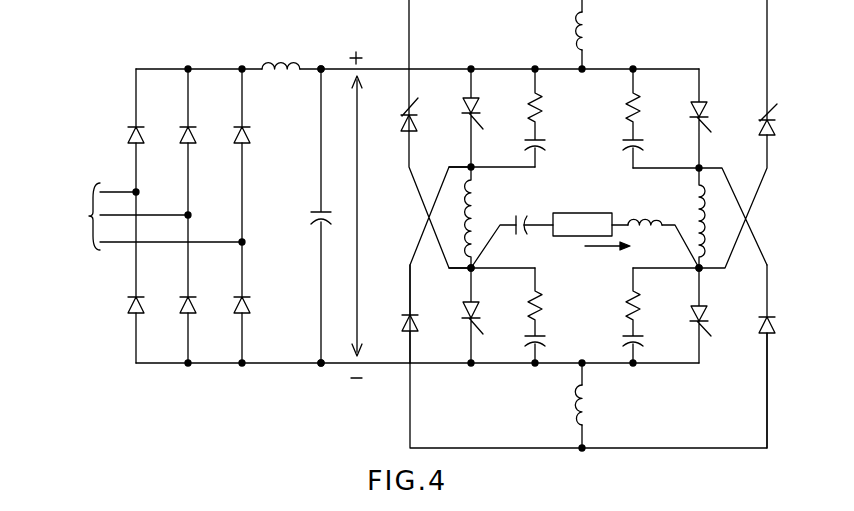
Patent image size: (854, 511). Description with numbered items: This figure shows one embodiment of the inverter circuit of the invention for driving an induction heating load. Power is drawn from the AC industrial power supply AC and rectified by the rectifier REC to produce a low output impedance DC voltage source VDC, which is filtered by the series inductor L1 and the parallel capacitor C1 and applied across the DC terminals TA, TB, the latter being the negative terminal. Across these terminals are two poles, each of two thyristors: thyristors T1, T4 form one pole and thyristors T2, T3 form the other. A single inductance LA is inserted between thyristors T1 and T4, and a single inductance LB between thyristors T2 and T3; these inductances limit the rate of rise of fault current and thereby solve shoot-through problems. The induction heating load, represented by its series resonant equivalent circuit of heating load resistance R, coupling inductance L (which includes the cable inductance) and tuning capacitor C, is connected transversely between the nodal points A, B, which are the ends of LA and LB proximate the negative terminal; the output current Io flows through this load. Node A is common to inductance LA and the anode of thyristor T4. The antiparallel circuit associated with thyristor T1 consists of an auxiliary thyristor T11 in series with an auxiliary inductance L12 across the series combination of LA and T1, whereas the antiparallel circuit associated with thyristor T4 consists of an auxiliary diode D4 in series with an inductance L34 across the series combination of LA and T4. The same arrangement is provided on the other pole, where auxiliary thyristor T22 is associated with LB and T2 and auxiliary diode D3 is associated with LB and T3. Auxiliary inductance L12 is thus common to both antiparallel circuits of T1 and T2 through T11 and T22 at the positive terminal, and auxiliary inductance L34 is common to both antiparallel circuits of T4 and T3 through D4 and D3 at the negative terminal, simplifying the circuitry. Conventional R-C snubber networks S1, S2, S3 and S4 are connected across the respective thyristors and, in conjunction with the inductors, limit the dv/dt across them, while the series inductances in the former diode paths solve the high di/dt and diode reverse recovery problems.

The rectifier REC is at (229, 185).
The AC industrial power supply AC is at (137, 216).
The series inductor L1 is at (286, 78).
The DC terminal TA is at (333, 67).
The DC terminal TB is at (332, 368).
The parallel capacitor C1 is at (305, 219).
The DC voltage source VDC is at (357, 216).
The auxiliary inductance L12 is at (585, 33).
The auxiliary inductance L34 is at (587, 407).
The auxiliary thyristor T11 is at (398, 123).
The thyristor T1 is at (462, 107).
The thyristor T2 is at (688, 106).
The auxiliary thyristor T22 is at (748, 127).
The thyristor T4 is at (460, 314).
The thyristor T3 is at (706, 324).
The auxiliary diode D4 is at (400, 323).
The auxiliary diode D3 is at (757, 331).
The snubber network S1 is at (563, 123).
The snubber network S2 is at (610, 123).
The snubber network S3 is at (610, 324).
The snubber network S4 is at (566, 324).
The inductance LA is at (474, 207).
The inductance LB is at (692, 204).
The tuning capacitor C is at (515, 212).
The heating load resistance R is at (586, 212).
The coupling inductance L is at (642, 228).
The output current Io is at (607, 260).
The nodal point A is at (478, 276).
The nodal point B is at (692, 276).